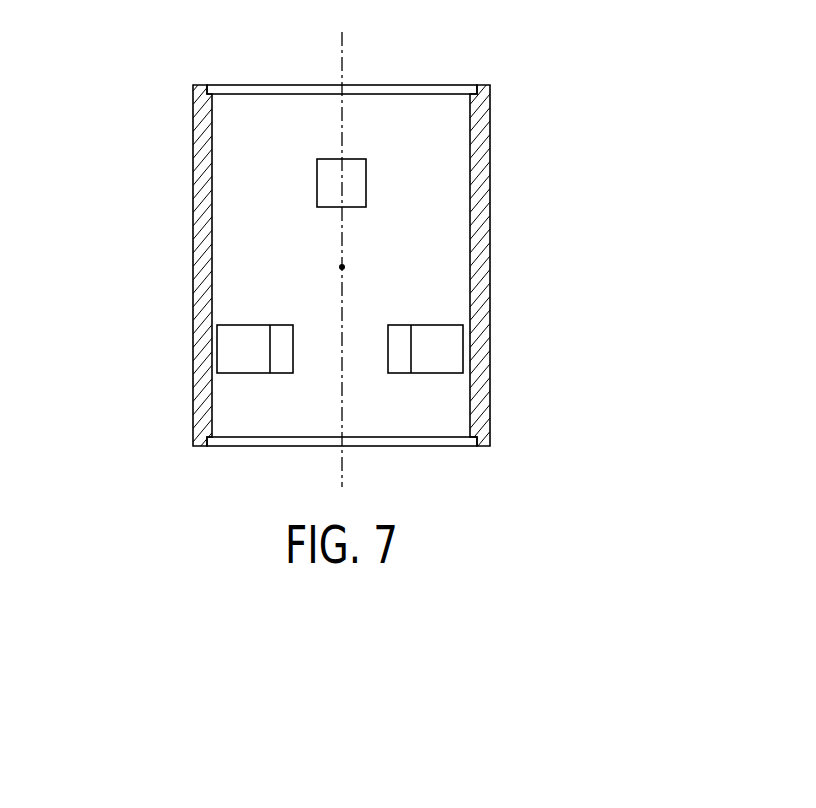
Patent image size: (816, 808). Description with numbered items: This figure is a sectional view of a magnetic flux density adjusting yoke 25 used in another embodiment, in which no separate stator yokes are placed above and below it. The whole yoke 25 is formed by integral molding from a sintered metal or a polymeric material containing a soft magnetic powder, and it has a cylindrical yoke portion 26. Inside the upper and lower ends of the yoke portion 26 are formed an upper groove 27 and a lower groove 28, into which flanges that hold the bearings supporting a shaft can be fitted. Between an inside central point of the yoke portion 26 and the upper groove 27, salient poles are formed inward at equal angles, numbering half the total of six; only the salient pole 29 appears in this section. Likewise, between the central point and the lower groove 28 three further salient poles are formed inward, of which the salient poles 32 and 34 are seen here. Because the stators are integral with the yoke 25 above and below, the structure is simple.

The magnetic flux density adjusting yoke 25 is at (134, 242).
The cylindrical yoke portion 26 is at (492, 200).
The upper groove 27 is at (476, 85).
The lower groove 28 is at (473, 441).
The salient pole 29 is at (356, 183).
The salient pole 32 is at (452, 350).
The salient pole 34 is at (232, 350).